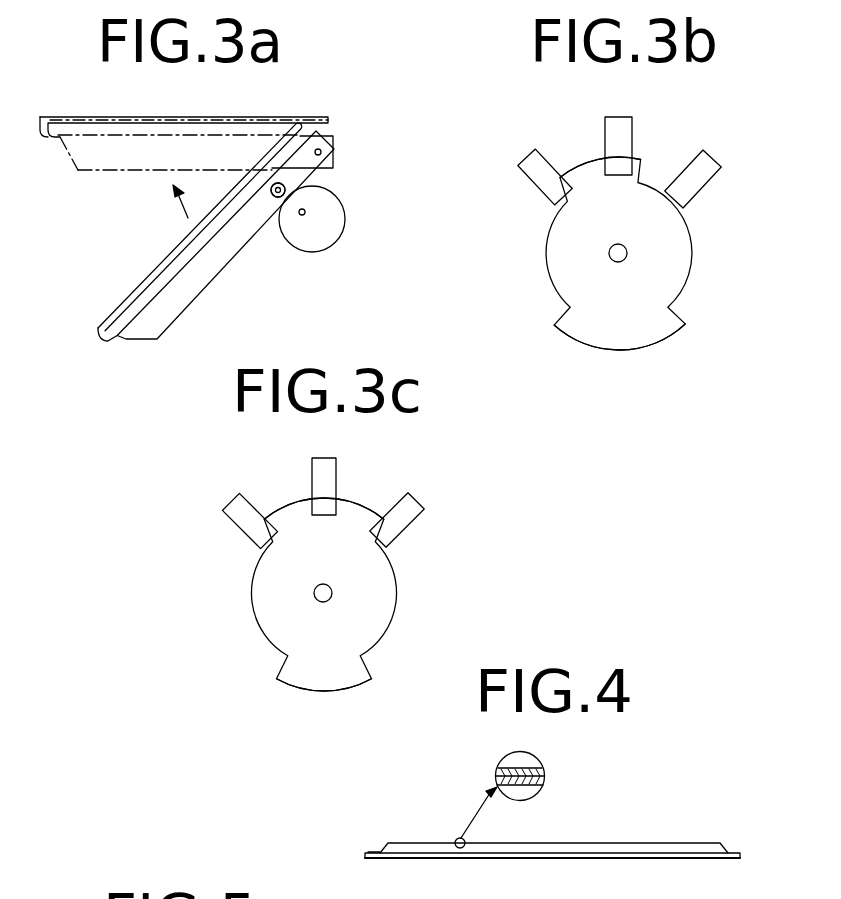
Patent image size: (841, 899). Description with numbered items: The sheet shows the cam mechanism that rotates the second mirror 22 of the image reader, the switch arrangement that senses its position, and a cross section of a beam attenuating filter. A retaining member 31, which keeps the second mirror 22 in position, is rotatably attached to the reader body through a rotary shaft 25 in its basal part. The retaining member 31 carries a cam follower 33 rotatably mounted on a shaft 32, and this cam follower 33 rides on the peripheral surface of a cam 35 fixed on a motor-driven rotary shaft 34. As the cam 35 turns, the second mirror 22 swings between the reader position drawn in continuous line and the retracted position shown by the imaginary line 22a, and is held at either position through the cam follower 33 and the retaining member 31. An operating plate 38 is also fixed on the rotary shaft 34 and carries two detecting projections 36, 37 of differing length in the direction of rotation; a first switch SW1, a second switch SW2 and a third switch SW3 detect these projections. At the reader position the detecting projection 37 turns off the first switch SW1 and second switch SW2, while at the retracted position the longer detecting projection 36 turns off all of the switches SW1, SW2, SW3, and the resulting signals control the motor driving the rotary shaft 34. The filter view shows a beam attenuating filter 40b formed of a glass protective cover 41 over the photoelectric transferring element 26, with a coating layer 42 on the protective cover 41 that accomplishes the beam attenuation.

In FIG. 3a, the second mirror 22 is at (122, 303).
In FIG. 3a, the imaginary line 22a is at (167, 117).
In FIG. 3a, the rotary shaft 25 is at (322, 152).
In FIG. 3a, the retaining member 31 is at (192, 292).
In FIG. 3a, the shaft 32 is at (277, 198).
In FIG. 3a, the cam follower 33 is at (279, 183).
In FIG. 3a, the rotary shaft 34 is at (305, 213).
In FIG. 3b, the rotary shaft 34 is at (628, 253).
In FIG. 3c, the rotary shaft 34 is at (333, 592).
In FIG. 3a, the cam 35 is at (319, 234).
In FIG. 3b, the detecting projection 36 is at (620, 346).
In FIG. 3c, the detecting projection 36 is at (365, 503).
In FIG. 3b, the detecting projection 37 is at (582, 165).
In FIG. 3c, the detecting projection 37 is at (326, 686).
In FIG. 3b, the operating plate 38 is at (552, 250).
In FIG. 3c, the operating plate 38 is at (256, 605).
In FIG. 3b, the first switch SW1 is at (531, 163).
In FIG. 3c, the first switch SW1 is at (238, 497).
In FIG. 3b, the second switch SW2 is at (622, 117).
In FIG. 3c, the second switch SW2 is at (327, 458).
In FIG. 3b, the third switch SW3 is at (737, 146).
In FIG. 3c, the third switch SW3 is at (412, 500).
In FIG. 4, the photoelectric transferring element 26 is at (690, 853).
In FIG. 4, the beam attenuating filter 40b is at (633, 843).
In FIG. 4, the protective cover 41 is at (536, 786).
In FIG. 4, the coating layer 42 is at (538, 764).